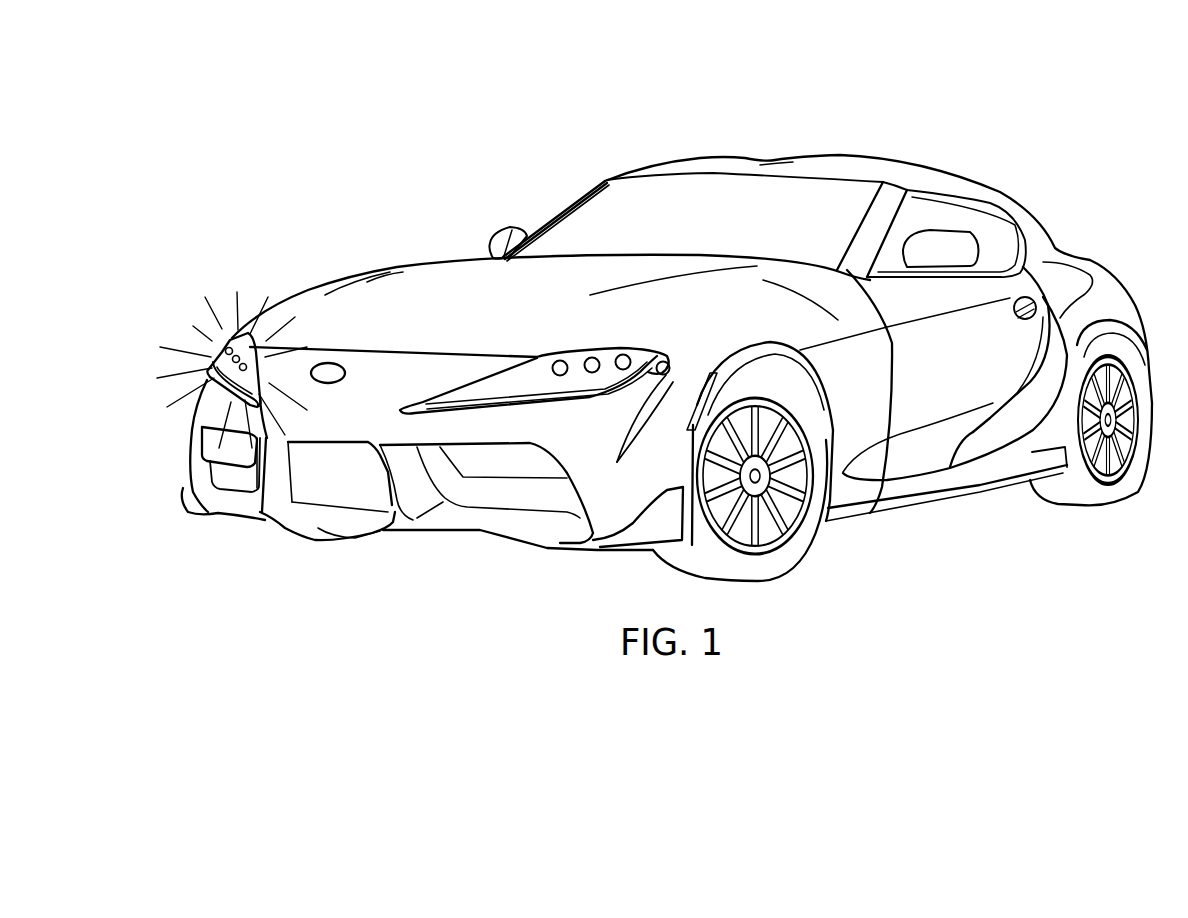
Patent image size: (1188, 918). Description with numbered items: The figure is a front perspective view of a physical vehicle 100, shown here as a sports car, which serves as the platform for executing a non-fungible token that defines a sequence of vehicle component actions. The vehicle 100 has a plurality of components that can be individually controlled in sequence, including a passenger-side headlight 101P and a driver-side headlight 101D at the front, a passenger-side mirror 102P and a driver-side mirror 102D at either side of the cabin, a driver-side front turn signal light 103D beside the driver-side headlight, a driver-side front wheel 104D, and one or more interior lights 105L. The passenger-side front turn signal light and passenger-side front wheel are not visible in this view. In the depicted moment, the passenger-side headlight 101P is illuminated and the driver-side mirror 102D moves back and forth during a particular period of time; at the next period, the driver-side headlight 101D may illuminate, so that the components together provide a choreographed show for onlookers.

The physical vehicle 100 is at (342, 153).
The passenger-side headlight 101P is at (217, 355).
The driver-side headlight 101D is at (533, 363).
The passenger-side mirror 102P is at (497, 240).
The driver-side mirror 102D is at (932, 253).
The driver-side front turn signal light 103D is at (666, 366).
The driver-side front wheel 104D is at (770, 550).
The interior lights 105L is at (617, 203).